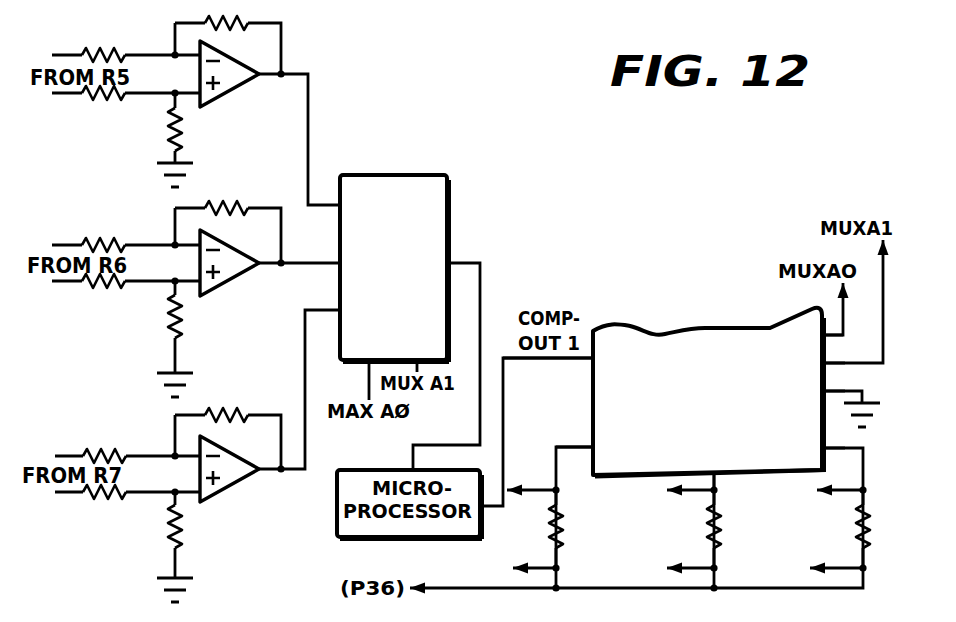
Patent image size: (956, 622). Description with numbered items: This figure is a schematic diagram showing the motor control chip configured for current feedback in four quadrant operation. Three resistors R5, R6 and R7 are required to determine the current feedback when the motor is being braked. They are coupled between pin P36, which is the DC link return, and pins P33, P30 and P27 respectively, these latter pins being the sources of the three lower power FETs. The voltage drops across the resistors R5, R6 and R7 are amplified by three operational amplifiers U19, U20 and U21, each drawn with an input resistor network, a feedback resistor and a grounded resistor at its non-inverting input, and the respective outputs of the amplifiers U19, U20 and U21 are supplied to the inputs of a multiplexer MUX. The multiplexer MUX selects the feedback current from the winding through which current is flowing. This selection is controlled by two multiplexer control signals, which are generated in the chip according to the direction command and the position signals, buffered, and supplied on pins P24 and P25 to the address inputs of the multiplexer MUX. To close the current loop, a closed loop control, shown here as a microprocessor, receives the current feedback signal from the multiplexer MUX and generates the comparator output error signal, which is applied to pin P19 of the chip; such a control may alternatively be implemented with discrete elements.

The operational amplifier U19 is at (231, 82).
The operational amplifier U20 is at (229, 272).
The operational amplifier U21 is at (232, 475).
The multiplexer MUX is at (394, 268).
The resistor R5 is at (574, 529).
The resistor R6 is at (732, 529).
The resistor R7 is at (881, 529).
The pin P19 is at (569, 361).
The pin P33 is at (596, 450).
The pin P30 is at (711, 468).
The pin P25 is at (809, 338).
The pin P24 is at (810, 365).
The pin P36 is at (810, 395).
The pin P27 is at (810, 451).